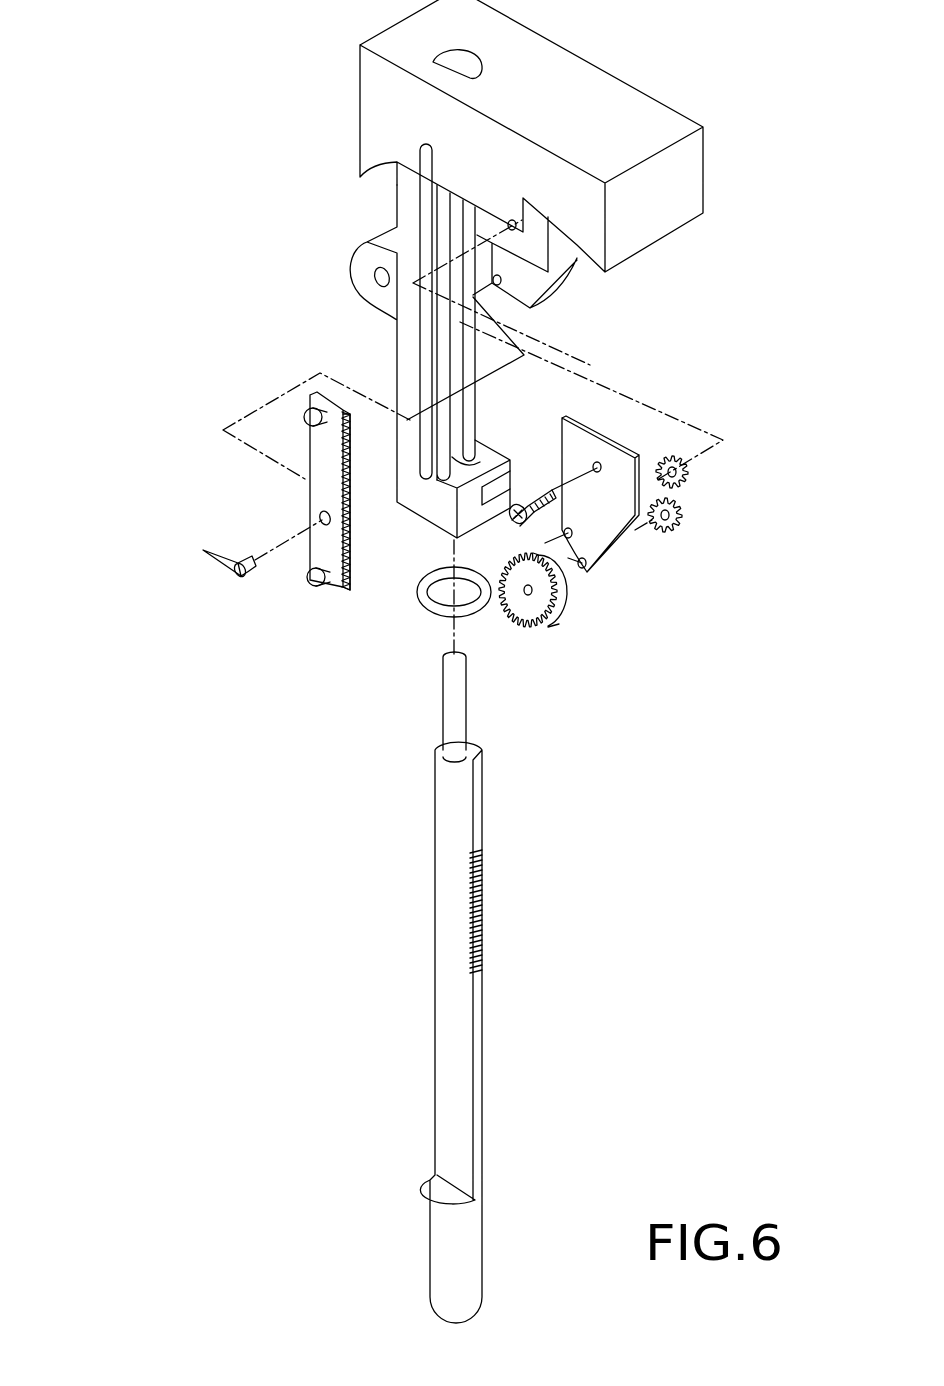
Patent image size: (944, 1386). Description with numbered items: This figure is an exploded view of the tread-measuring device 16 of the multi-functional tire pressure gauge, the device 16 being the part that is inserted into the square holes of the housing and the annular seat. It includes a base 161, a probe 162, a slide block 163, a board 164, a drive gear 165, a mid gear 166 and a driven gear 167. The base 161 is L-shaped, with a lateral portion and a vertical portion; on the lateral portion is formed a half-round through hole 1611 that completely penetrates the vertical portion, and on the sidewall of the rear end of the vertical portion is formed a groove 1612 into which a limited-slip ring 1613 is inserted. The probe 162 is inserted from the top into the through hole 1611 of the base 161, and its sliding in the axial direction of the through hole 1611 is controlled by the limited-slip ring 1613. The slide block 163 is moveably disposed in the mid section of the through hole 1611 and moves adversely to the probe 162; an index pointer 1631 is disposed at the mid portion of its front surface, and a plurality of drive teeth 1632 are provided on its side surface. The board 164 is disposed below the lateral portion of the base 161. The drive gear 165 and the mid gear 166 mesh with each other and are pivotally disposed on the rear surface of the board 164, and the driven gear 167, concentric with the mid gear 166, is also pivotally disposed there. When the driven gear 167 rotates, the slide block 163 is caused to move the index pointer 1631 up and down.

The tread-measuring device 16 is at (300, 293).
The base 161 is at (668, 102).
The half-round through hole 1611 is at (447, 61).
The groove 1612 is at (493, 497).
The limited-slip ring 1613 is at (482, 603).
The probe 162 is at (487, 1058).
The slide block 163 is at (310, 498).
The index pointer 1631 is at (205, 553).
The drive teeth 1632 is at (356, 592).
The board 164 is at (611, 532).
The drive gear 165 is at (692, 470).
The mid gear 166 is at (684, 518).
The driven gear 167 is at (566, 610).